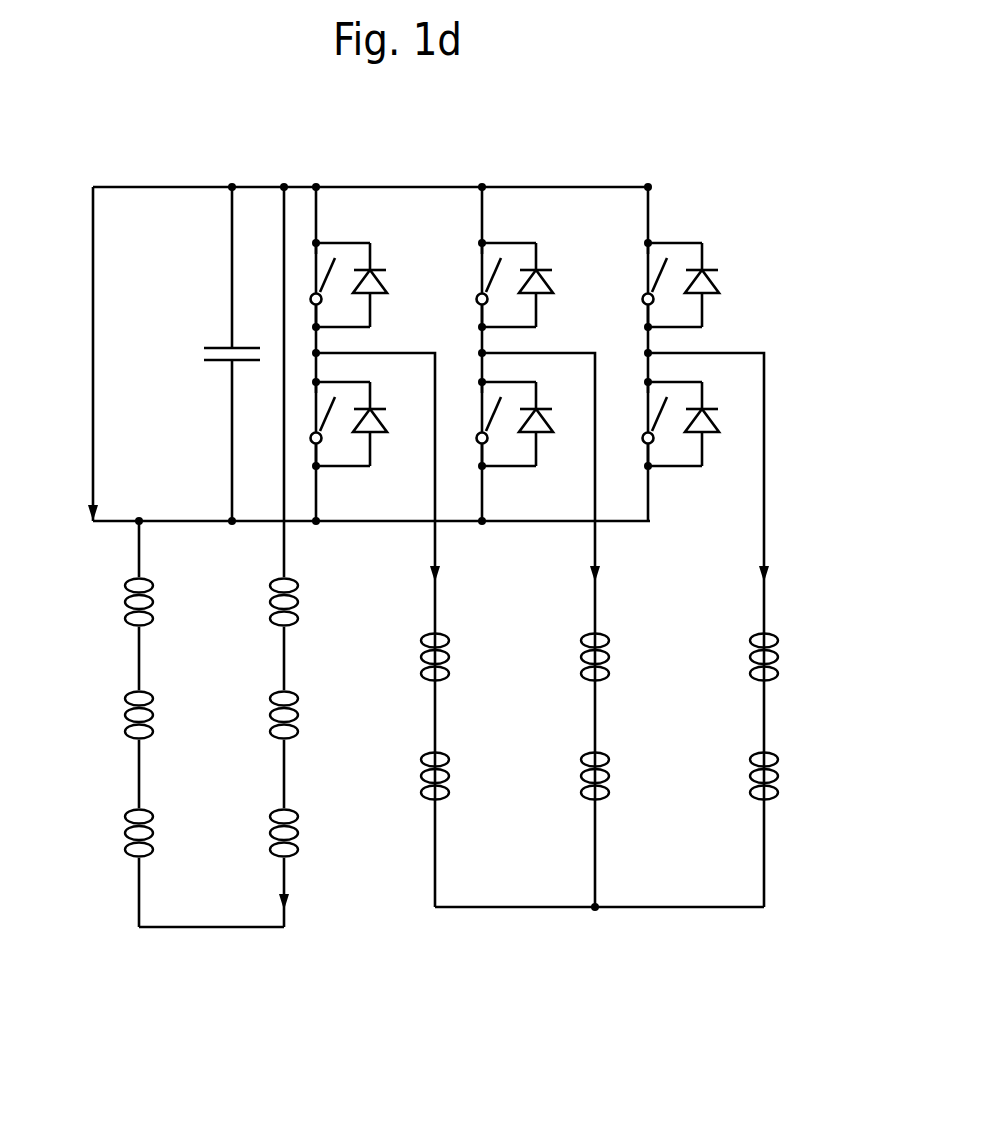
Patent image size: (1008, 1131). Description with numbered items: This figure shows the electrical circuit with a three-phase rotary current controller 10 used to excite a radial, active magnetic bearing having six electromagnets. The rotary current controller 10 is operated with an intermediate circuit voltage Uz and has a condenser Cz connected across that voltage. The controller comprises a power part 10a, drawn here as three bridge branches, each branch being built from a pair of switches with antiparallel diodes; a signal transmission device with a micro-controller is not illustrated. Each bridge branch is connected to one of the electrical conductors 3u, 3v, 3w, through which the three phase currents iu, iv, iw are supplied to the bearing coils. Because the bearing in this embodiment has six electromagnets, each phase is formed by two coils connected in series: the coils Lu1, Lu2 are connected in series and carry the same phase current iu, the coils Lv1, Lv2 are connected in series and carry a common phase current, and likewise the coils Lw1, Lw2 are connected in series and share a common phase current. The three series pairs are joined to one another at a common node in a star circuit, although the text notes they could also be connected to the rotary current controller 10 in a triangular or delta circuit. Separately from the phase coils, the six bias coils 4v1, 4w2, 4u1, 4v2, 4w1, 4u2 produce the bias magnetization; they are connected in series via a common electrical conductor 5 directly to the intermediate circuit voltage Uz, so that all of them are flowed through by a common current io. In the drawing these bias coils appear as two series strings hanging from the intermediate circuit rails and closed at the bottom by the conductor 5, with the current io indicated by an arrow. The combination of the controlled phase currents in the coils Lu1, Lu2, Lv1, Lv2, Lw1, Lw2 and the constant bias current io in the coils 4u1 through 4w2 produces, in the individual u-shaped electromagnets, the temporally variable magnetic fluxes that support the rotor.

The rotary current controller 10 is at (621, 541).
The power part 10a is at (621, 541).
The electrical conductor 3u is at (595, 504).
The electrical conductor 3v is at (765, 492).
The electrical conductor 3w is at (435, 495).
The electrical conductor 5 is at (139, 548).
The intermediate circuit voltage Uz is at (75, 354).
The condenser Cz is at (215, 354).
The coil 4u1 is at (316, 834).
The coil 4u2 is at (172, 604).
The coil 4v1 is at (316, 604).
The coil 4v2 is at (171, 834).
The coil 4w1 is at (173, 717).
The coil 4w2 is at (318, 717).
The coil Lu1 is at (610, 662).
The coil Lu2 is at (610, 784).
The coil Lv1 is at (780, 660).
The coil Lv2 is at (780, 785).
The coil Lw1 is at (450, 665).
The coil Lw2 is at (450, 785).
The phase current iu is at (625, 573).
The phase current iv is at (793, 573).
The phase current iw is at (471, 573).
The common current io is at (321, 905).